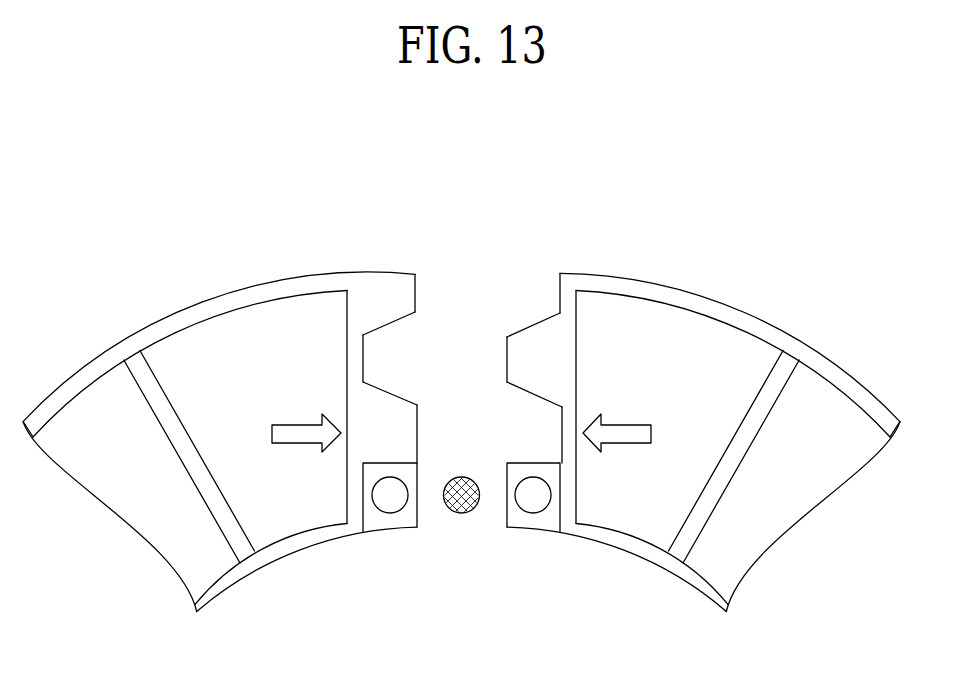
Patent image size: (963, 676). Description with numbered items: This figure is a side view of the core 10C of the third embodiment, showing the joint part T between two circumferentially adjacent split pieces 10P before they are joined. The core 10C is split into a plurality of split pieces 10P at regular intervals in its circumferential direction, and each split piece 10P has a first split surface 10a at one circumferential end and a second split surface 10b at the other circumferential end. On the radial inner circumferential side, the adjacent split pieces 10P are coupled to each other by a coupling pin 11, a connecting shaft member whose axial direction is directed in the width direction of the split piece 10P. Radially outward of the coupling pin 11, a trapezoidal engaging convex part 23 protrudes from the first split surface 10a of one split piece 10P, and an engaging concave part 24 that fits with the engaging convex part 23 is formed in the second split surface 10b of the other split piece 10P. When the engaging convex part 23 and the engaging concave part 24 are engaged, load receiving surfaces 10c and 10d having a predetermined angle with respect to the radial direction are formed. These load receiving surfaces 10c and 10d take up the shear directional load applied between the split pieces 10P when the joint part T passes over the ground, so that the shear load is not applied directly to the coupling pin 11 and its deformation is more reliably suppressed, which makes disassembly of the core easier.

The core 10C is at (688, 271).
The split piece 10P is at (217, 300).
The first split surface 10a is at (418, 418).
The second split surface 10b is at (559, 289).
The load receiving surface 10c is at (525, 328).
The load receiving surface 10d is at (418, 326).
The engaging convex part 23 is at (533, 347).
The engaging concave part 24 is at (403, 318).
The coupling pin 11 is at (458, 513).
The joint part T is at (482, 248).